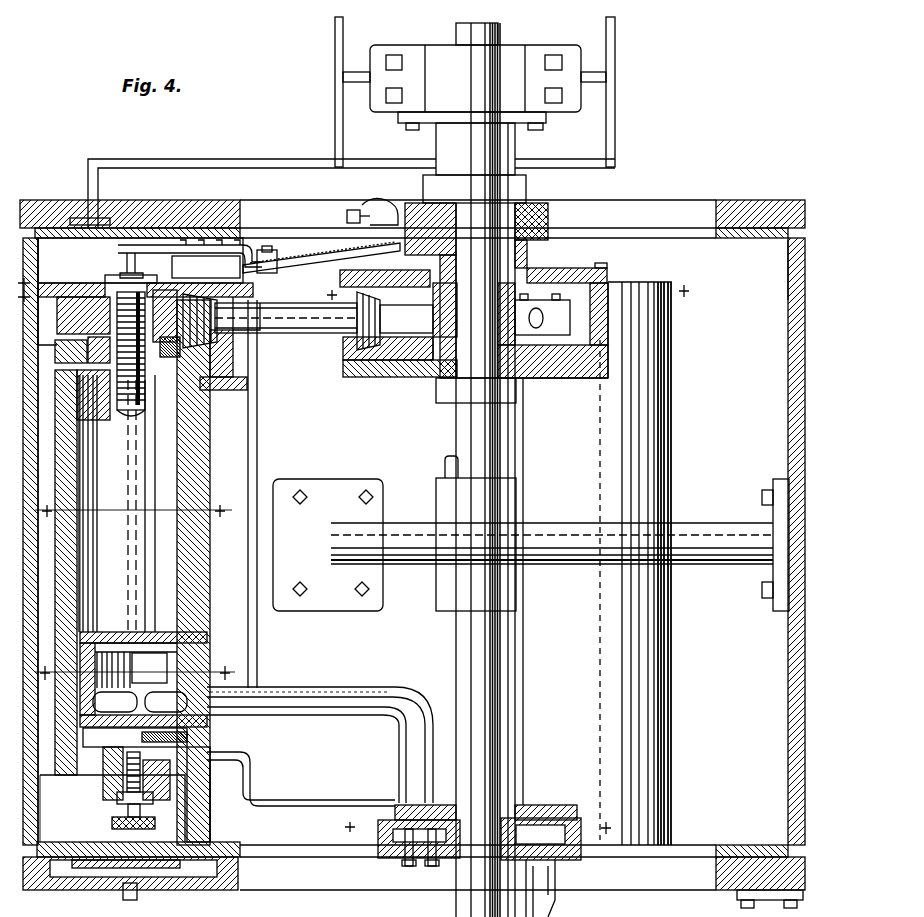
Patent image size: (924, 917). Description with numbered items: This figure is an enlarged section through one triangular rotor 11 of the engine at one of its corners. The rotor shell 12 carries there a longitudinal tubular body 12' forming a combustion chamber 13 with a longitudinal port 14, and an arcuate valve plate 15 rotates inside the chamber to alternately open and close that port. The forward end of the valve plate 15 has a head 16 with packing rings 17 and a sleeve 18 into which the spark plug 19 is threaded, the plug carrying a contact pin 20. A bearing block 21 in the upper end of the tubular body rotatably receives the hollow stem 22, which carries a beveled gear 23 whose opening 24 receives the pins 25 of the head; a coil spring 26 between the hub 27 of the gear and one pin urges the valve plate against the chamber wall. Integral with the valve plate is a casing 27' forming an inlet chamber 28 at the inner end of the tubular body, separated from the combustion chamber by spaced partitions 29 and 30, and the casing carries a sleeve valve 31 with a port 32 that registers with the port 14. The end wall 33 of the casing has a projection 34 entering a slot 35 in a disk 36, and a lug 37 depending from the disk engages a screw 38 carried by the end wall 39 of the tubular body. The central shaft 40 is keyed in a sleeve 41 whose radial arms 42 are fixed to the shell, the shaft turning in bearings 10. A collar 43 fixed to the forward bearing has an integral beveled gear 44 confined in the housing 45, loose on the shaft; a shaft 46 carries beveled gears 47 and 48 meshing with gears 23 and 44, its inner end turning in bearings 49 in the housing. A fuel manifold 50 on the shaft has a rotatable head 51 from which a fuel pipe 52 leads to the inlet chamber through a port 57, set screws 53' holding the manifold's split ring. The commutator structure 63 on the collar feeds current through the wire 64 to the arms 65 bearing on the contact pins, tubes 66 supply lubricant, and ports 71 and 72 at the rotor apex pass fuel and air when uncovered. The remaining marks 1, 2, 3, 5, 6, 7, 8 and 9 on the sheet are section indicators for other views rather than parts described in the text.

The casing cover 1 is at (744, 214).
The casing top plate 2 is at (620, 216).
The base plate 3 is at (310, 875).
The section line 5 is at (507, 281).
The section line 6 is at (477, 823).
The section line 7 is at (272, 290).
The section line 8 is at (133, 500).
The section line 9 is at (135, 663).
The bearings 10 is at (515, 48).
The triangular rotor 11 is at (780, 422).
The triangular shaped shell 12 is at (499, 428).
The longitudinal tubular body 12' is at (628, 563).
The combustion chamber 13 is at (57, 572).
The longitudinal port 14 is at (95, 557).
The valve plate 15 is at (186, 545).
The head 16 is at (212, 388).
The packing rings 17 is at (48, 540).
The sleeve 18 is at (98, 276).
The spark plug 19 is at (120, 415).
The contact pin 20 is at (116, 226).
The bearing block 21 is at (83, 315).
The hollow stem 22 is at (44, 321).
The beveled gear 23 is at (74, 395).
The opening 24 is at (58, 350).
The pins 25 is at (256, 378).
The coil spring 26 is at (232, 378).
The hub 27 is at (99, 503).
The casing 27' is at (70, 808).
The inlet chamber 28 is at (112, 808).
The partition 29 is at (112, 630).
The partition 30 is at (222, 636).
The sleeve valve 31 is at (80, 745).
The port 32 is at (132, 670).
The end wall 33 is at (207, 727).
The projection 34 is at (205, 800).
The slot 35 is at (190, 745).
The disk 36 is at (140, 704).
The lug 37 is at (146, 820).
The screw 38 is at (130, 900).
The end wall 39 is at (206, 795).
The shaft 40 is at (458, 652).
The sleeve 41 is at (476, 533).
The radial arms 42 is at (732, 504).
The collar 43 is at (530, 255).
The beveled gear 44 is at (395, 365).
The housing 45 is at (556, 378).
The shaft 46 is at (348, 345).
The beveled gear 47 is at (248, 340).
The beveled gear 48 is at (342, 352).
The bearings 49 is at (598, 318).
The fuel manifold 50 is at (452, 872).
The head 51 is at (550, 815).
The fuel conducting pipe 52 is at (340, 686).
The set screws 53' is at (405, 873).
The ports 57 is at (420, 815).
The commutator structure 63 is at (400, 200).
The wire 64 is at (318, 255).
The arms 65 is at (176, 250).
The assembly of tubes 66 is at (621, 116).
The ports 71 is at (168, 470).
The ports 72 is at (112, 527).